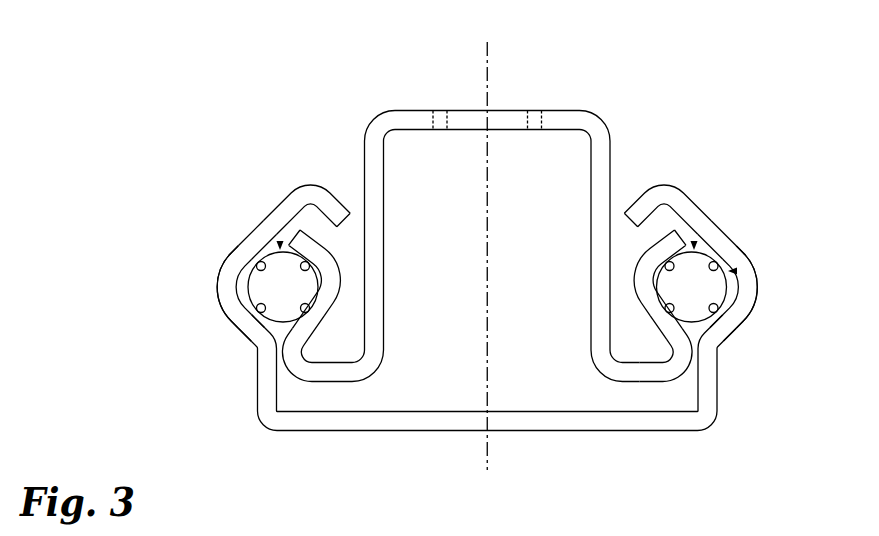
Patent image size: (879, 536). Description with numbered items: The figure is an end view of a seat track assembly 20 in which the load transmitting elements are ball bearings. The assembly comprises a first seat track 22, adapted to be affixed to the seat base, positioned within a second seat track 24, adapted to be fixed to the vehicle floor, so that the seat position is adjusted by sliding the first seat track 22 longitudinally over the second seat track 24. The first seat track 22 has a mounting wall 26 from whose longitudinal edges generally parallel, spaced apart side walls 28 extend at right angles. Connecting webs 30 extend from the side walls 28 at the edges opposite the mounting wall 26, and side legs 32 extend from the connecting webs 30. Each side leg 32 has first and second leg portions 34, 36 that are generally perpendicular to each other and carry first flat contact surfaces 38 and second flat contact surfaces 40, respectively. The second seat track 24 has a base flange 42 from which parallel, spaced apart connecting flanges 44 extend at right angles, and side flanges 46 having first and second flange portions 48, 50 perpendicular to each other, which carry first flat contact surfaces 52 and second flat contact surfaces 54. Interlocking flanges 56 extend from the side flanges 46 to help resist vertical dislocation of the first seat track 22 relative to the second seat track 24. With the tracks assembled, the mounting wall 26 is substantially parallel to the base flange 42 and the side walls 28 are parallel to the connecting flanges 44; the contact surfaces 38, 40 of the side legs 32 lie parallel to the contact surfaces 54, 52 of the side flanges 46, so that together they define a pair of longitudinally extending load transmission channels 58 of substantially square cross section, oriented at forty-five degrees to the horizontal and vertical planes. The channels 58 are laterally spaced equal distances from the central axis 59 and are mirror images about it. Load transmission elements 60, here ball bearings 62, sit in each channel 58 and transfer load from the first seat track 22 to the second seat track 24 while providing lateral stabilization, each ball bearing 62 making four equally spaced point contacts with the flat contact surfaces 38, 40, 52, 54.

The seat track assembly 20 is at (497, 253).
The first seat track 22 is at (474, 272).
The second seat track 24 is at (477, 307).
The mounting wall 26 is at (470, 110).
The side walls 28 is at (384, 297).
The connecting webs 30 is at (328, 384).
The side legs 32 is at (258, 358).
The first leg portions 34 is at (314, 328).
The second leg portions 36 is at (318, 247).
The first flat contact surfaces 38 is at (324, 300).
The second flat contact surfaces 40 is at (505, 285).
The base flange 42 is at (453, 432).
The connecting flanges 44 is at (254, 388).
The side flanges 46 is at (217, 290).
The first flange portions 48 is at (277, 323).
The second flange portions 50 is at (258, 222).
The first flat contact surfaces 52 is at (262, 302).
The second flat contact surfaces 54 is at (235, 276).
The interlocking flanges 56 is at (337, 197).
The load transmission channels 58 is at (280, 242).
The load transmission elements 60 is at (225, 266).
The ball bearings 62 is at (253, 334).
The central axis 59 is at (496, 42).